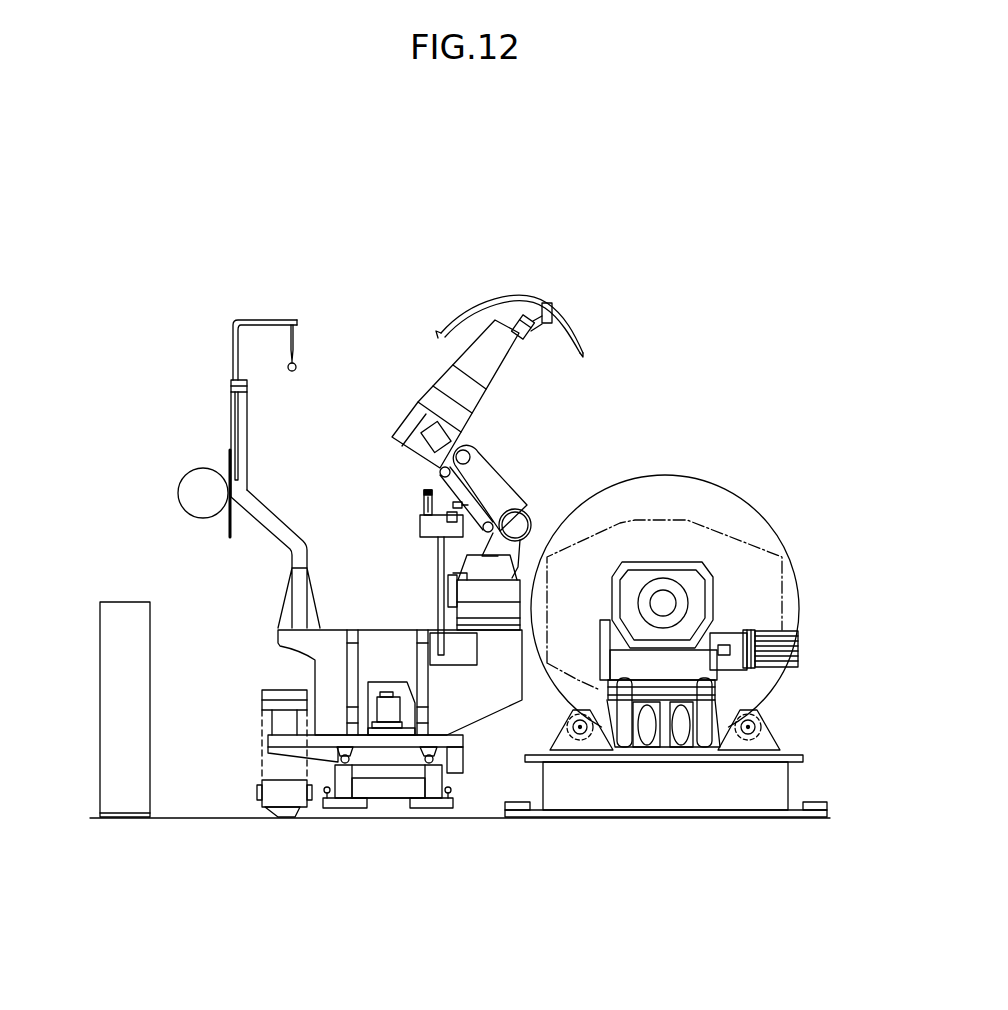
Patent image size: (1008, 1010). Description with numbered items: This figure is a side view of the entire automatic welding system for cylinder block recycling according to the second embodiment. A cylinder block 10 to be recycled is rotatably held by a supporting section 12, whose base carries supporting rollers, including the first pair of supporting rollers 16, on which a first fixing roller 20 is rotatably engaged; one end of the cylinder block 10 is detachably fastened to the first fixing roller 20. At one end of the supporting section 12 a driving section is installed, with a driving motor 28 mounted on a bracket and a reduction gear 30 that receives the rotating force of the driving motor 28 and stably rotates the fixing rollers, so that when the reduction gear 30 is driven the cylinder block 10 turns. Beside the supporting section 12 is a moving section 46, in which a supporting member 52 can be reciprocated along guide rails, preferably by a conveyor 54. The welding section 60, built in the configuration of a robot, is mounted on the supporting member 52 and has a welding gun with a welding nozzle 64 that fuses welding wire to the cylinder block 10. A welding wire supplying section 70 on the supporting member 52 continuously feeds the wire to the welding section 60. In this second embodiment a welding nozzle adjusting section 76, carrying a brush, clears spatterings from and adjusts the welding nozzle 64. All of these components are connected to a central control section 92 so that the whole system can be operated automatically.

The cylinder block 10 is at (787, 577).
The supporting section 12 is at (797, 735).
The first pair of supporting rollers 16 is at (748, 747).
The first fixing roller 20 is at (645, 482).
The driving motor 28 is at (793, 643).
The reduction gear 30 is at (680, 590).
The moving section 46 is at (243, 718).
The supporting member 52 is at (338, 662).
The conveyor 54 is at (265, 765).
The welding section 60 is at (430, 398).
The welding nozzle 64 is at (587, 353).
The welding wire supplying section 70 is at (223, 372).
The welding nozzle adjusting section 76 is at (420, 525).
The central control section 92 is at (105, 645).